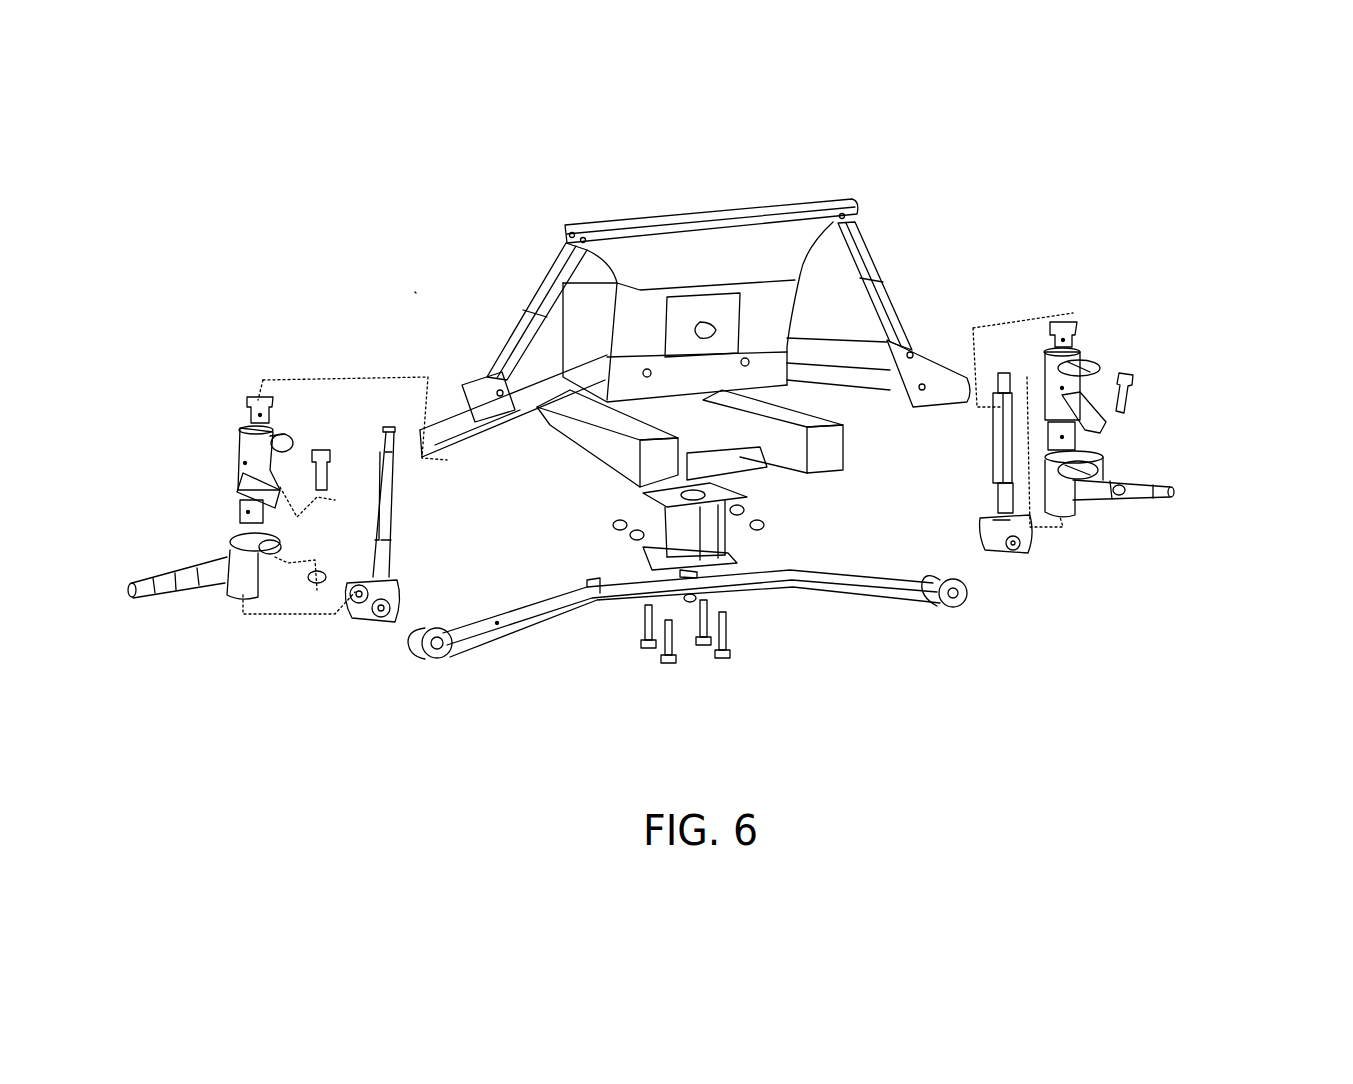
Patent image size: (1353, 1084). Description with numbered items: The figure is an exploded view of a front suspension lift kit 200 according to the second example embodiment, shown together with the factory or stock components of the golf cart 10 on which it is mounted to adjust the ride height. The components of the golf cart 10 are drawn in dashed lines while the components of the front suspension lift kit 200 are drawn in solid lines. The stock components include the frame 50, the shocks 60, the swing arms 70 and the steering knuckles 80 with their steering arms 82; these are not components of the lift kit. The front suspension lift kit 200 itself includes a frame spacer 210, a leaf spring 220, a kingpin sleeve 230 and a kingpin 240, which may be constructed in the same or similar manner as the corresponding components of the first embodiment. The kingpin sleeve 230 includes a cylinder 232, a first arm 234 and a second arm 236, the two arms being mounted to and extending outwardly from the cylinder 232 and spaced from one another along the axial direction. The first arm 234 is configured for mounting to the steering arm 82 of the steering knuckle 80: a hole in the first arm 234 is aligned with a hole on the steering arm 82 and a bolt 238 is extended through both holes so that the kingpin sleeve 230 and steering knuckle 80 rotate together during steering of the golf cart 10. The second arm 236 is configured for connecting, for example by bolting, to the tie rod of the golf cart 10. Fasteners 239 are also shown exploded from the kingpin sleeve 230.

The golf cart 10 is at (855, 193).
The front suspension lift kit 200 is at (408, 283).
The shocks 60 is at (520, 310).
The swing arms 70 is at (515, 415).
The frame 50 is at (772, 468).
The frame spacer 210 is at (687, 535).
The leaf spring 220 is at (483, 652).
The kingpin sleeve 230 is at (230, 470).
The cylinder 232 is at (240, 440).
The first arm 234 is at (240, 493).
The second arm 236 is at (293, 447).
The bolt 238 is at (1135, 378).
The fasteners 239 is at (237, 477).
The kingpin 240 is at (340, 607).
The steering knuckles 80 is at (210, 583).
The steering arms 82 is at (227, 550).